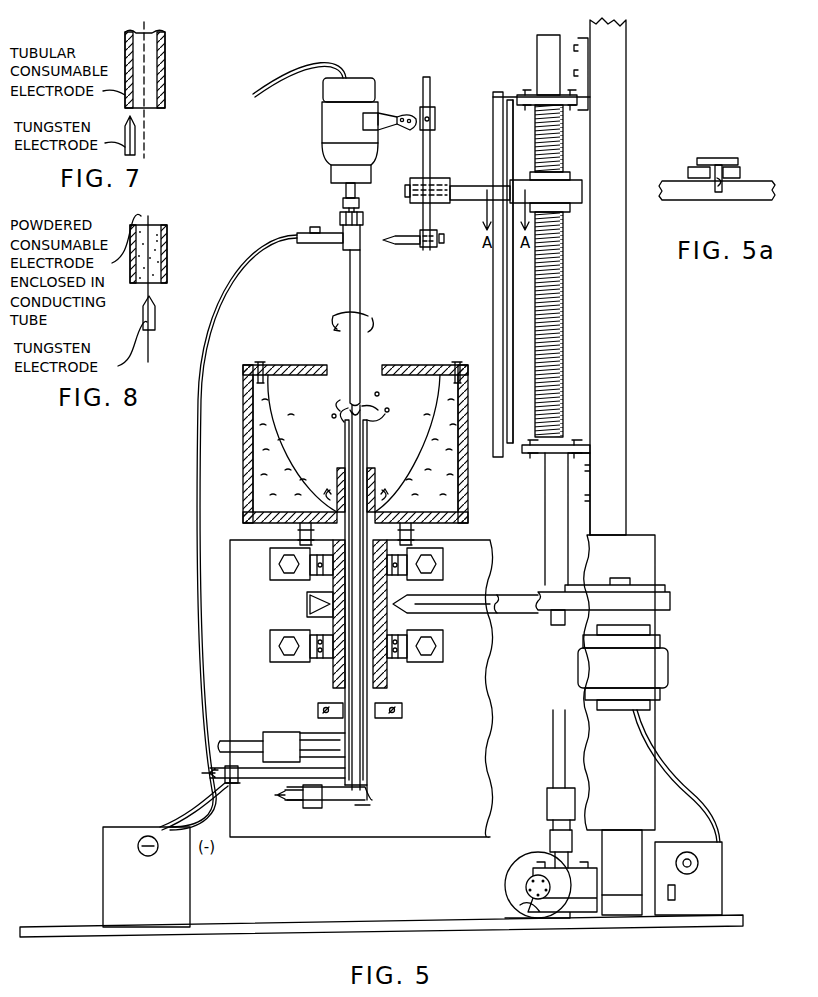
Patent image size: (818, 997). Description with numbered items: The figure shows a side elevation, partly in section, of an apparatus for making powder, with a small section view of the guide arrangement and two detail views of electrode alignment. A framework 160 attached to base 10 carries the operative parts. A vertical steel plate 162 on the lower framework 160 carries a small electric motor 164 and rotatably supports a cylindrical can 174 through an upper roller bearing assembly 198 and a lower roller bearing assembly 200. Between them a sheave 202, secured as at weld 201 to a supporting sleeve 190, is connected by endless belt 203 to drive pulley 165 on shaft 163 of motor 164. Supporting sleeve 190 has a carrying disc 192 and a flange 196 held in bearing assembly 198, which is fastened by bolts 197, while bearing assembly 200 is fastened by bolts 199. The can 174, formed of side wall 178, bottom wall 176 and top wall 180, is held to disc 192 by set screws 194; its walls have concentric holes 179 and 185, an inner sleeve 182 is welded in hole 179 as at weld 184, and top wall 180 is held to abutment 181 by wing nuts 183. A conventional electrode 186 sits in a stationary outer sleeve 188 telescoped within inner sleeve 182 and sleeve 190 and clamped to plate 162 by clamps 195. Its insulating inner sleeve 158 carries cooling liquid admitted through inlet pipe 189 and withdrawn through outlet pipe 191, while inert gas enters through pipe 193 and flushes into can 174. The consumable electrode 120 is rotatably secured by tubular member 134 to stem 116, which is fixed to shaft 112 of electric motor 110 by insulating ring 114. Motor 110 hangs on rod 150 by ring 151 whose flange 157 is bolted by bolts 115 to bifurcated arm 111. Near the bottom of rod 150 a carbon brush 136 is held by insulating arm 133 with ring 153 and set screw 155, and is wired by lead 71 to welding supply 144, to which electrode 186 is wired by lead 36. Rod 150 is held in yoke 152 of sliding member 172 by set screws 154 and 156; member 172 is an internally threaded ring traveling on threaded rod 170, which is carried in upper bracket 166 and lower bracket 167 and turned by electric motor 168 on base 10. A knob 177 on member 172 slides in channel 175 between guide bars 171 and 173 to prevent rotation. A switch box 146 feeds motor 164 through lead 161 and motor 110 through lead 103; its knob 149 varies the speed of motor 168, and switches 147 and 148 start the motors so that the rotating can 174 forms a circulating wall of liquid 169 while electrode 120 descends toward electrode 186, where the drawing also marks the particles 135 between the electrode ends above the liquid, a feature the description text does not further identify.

In FIG. 5, the base 10 is at (303, 926).
In FIG. 5, the electric lead 36 is at (221, 818).
In FIG. 5, the electric lead 71 is at (227, 280).
In FIG. 5, the lead 103 is at (282, 66).
In FIG. 5, the electric motor 110 is at (362, 99).
In FIG. 5, the bifurcated arm 111 is at (381, 112).
In FIG. 5, the shaft 112 is at (345, 190).
In FIG. 5, the insulating ring 114 is at (359, 203).
In FIG. 5, the bolts 115 is at (412, 127).
In FIG. 5, the stem 116 is at (340, 216).
In FIG. 5, the consumable electrode 120 is at (362, 295).
In FIG. 5, the insulating arm 133 is at (395, 244).
In FIG. 5, the tubular member 134 is at (345, 248).
In FIG. 5, the molten droplets 135 is at (388, 409).
In FIG. 5, the carbon brush 136 is at (310, 243).
In FIG. 5, the welding supply 144 is at (161, 893).
In FIG. 5, the switch box 146 is at (714, 900).
In FIG. 5, the switch 147 is at (675, 900).
In FIG. 5, the switch 148 is at (138, 836).
In FIG. 5, the knob 149 is at (698, 863).
In FIG. 5, the rod 150 is at (431, 150).
In FIG. 5, the ring 151 is at (435, 119).
In FIG. 5, the yoke 152 is at (418, 178).
In FIG. 5, the ring 153 is at (437, 230).
In FIG. 5, the set screw 154 is at (405, 193).
In FIG. 5, the set screw 155 is at (445, 242).
In FIG. 5, the set screw 156 is at (466, 186).
In FIG. 5, the flange 157 is at (405, 114).
In FIG. 5, the inner sleeve 158 is at (366, 798).
In FIG. 5, the framework 160 is at (637, 865).
In FIG. 5, the electric lead 161 is at (697, 804).
In FIG. 5, the steel plate 162 is at (463, 771).
In FIG. 5, the shaft 163 is at (566, 618).
In FIG. 5, the electric motor 164 is at (637, 674).
In FIG. 5, the drive pulley 165 is at (665, 585).
In FIG. 5, the upper bracket 166 is at (540, 100).
In FIG. 5, the lower bracket 167 is at (550, 458).
In FIG. 5, the electric motor 168 is at (510, 880).
In FIG. 5, the circulating wall of liquid 169 is at (272, 410).
In FIG. 5, the rod 170 is at (564, 340).
In FIG. 5a, the guide bar 171 is at (742, 170).
In FIG. 5, the guide bar 171 is at (514, 292).
In FIG. 5a, the sliding member 172 is at (765, 200).
In FIG. 5, the sliding member 172 is at (566, 200).
In FIG. 5a, the guide bar 173 is at (688, 170).
In FIG. 5, the guide bar 173 is at (497, 308).
In FIG. 5, the cylindrical can 174 is at (243, 451).
In FIG. 5a, the channel 175 is at (715, 186).
In FIG. 5, the channel 175 is at (511, 335).
In FIG. 5, the bottom wall 176 is at (243, 502).
In FIG. 5a, the knob 177 is at (722, 158).
In FIG. 5, the side wall 178 is at (246, 400).
In FIG. 5, the concentric hole 179 is at (377, 512).
In FIG. 5, the top wall 180 is at (432, 368).
In FIG. 5, the abutment 181 is at (455, 400).
In FIG. 5, the inner sleeve 182 is at (376, 476).
In FIG. 5, the wing nuts 183 is at (263, 360).
In FIG. 5, the weld 184 is at (335, 512).
In FIG. 5, the concentric hole 185 is at (327, 370).
In FIG. 5, the conventional electrode 186 is at (350, 420).
In FIG. 5, the outer sleeve 188 is at (368, 448).
In FIG. 5, the inlet pipe 189 is at (218, 782).
In FIG. 5, the supporting sleeve 190 is at (387, 674).
In FIG. 5, the outlet pipe 191 is at (300, 806).
In FIG. 5, the carrying disc 192 is at (298, 532).
In FIG. 5, the pipe 193 is at (240, 742).
In FIG. 5, the set screws 194 is at (300, 545).
In FIG. 5, the clamps 195 is at (318, 712).
In FIG. 5, the flange 196 is at (312, 572).
In FIG. 5, the bolts 197 is at (284, 565).
In FIG. 5, the upper roller bearing assembly 198 is at (412, 595).
In FIG. 5, the bolts 199 is at (282, 648).
In FIG. 5, the lower roller bearing assembly 200 is at (320, 660).
In FIG. 5, the weld 201 is at (315, 592).
In FIG. 5, the sheave 202 is at (320, 614).
In FIG. 5, the endless belt 203 is at (538, 608).